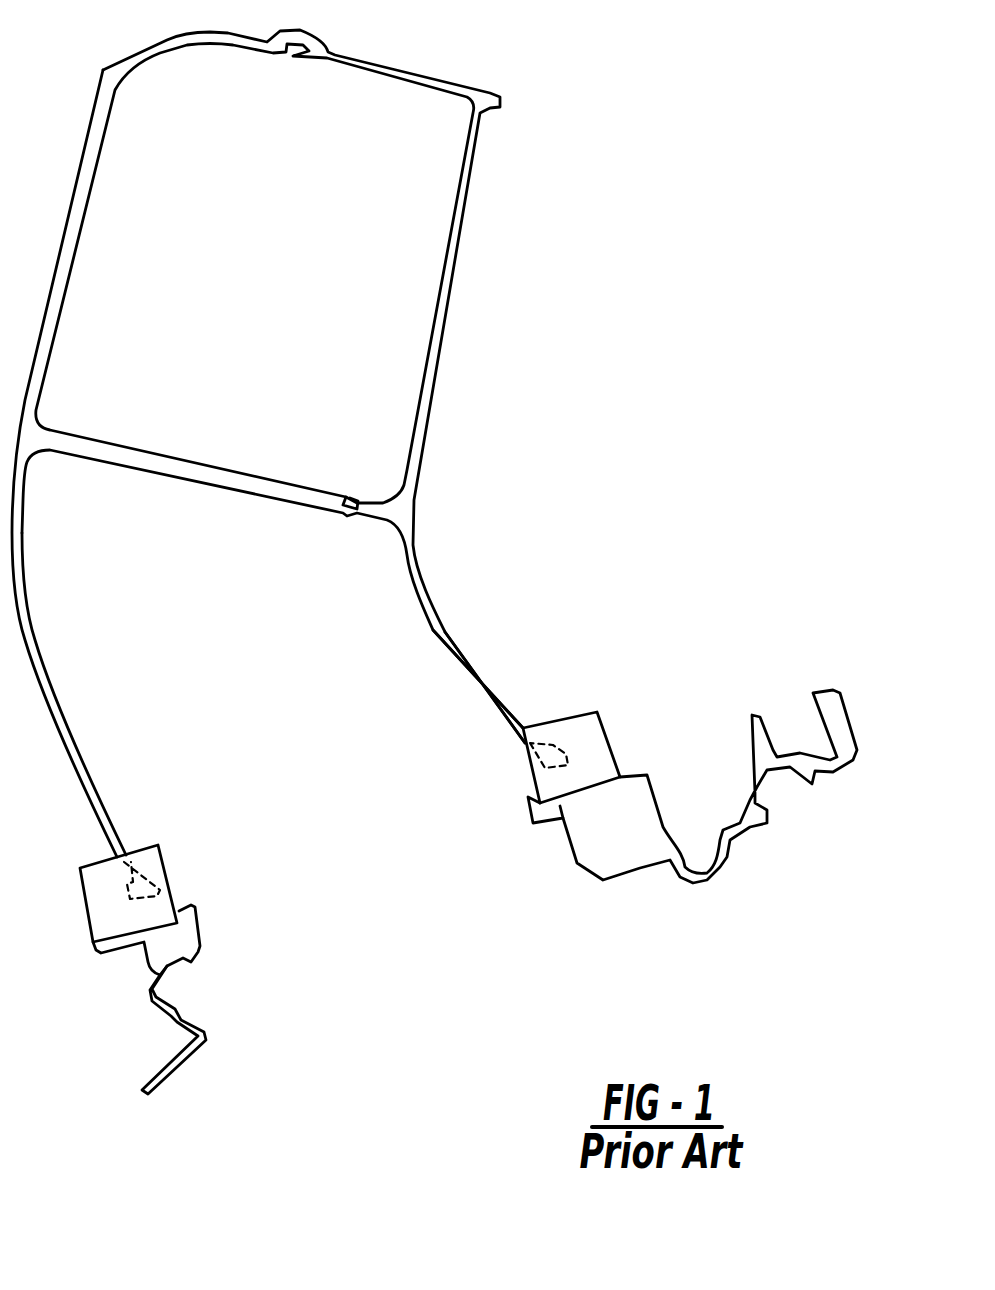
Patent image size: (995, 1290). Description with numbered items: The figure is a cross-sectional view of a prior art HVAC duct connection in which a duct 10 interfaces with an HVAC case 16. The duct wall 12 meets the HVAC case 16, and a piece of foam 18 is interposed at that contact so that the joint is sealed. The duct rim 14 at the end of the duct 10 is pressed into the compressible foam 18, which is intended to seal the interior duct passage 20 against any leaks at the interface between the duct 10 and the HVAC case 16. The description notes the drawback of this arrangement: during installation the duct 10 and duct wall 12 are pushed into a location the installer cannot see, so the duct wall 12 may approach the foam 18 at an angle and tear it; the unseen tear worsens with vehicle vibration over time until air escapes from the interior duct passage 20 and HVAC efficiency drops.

The duct 10 is at (449, 302).
The duct wall 12 is at (443, 627).
The duct rim 14 is at (557, 750).
The foam 18 is at (597, 712).
The HVAC case 16 is at (646, 774).
The interior duct passage 20 is at (533, 820).